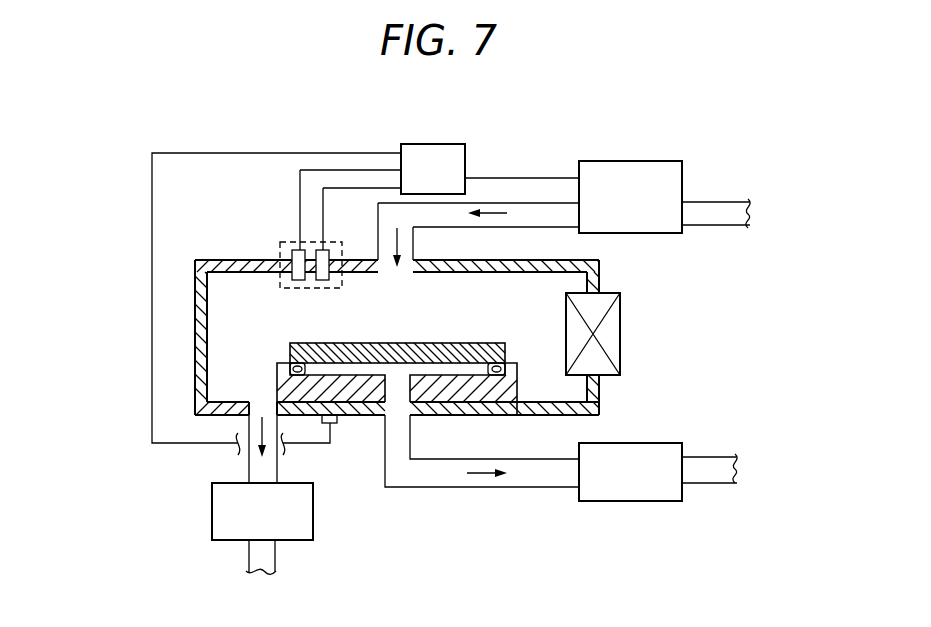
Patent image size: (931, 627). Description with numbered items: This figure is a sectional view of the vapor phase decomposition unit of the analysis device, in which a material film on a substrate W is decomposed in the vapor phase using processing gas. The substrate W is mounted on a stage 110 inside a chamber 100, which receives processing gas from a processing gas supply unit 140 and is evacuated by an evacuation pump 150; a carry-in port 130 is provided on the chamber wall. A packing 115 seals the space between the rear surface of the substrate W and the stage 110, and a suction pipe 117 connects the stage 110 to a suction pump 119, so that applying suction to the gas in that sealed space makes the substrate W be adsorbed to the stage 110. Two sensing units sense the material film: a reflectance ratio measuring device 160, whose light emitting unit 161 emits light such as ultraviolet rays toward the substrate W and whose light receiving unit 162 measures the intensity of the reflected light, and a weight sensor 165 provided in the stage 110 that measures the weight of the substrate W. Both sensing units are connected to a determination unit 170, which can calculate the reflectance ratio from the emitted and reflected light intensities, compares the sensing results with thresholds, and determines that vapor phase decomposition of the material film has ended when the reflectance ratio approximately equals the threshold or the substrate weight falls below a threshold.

The chamber 100 is at (600, 400).
The stage 110 is at (462, 404).
The packing 115 is at (288, 360).
The suction pipe 117 is at (452, 488).
The suction pump 119 is at (635, 502).
The carry-in port 130 is at (612, 330).
The processing gas supply unit 140 is at (682, 183).
The evacuation pump 150 is at (210, 512).
The reflectance ratio measuring device 160 is at (320, 263).
The light emitting unit 161 is at (325, 282).
The light receiving unit 162 is at (299, 281).
The weight sensor 165 is at (333, 430).
The determination unit 170 is at (430, 144).
The substrate W is at (462, 343).